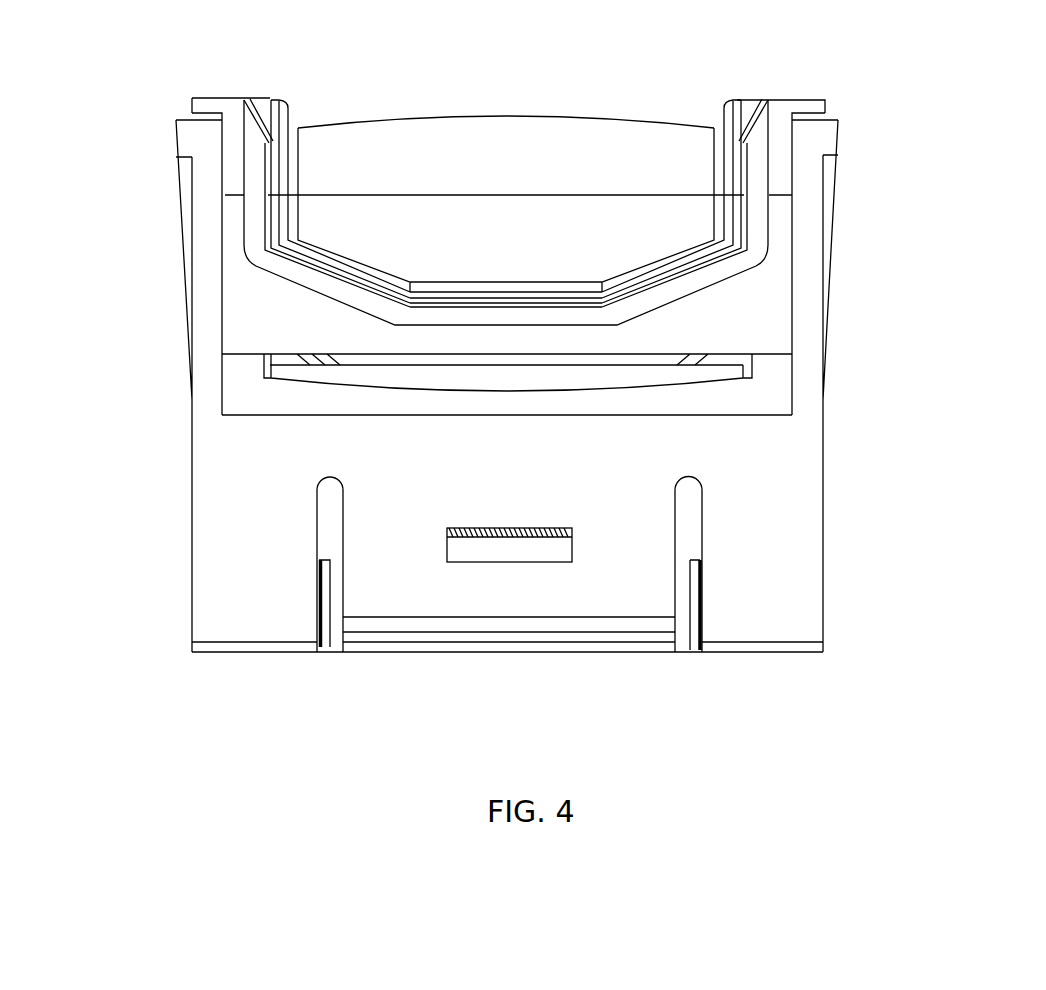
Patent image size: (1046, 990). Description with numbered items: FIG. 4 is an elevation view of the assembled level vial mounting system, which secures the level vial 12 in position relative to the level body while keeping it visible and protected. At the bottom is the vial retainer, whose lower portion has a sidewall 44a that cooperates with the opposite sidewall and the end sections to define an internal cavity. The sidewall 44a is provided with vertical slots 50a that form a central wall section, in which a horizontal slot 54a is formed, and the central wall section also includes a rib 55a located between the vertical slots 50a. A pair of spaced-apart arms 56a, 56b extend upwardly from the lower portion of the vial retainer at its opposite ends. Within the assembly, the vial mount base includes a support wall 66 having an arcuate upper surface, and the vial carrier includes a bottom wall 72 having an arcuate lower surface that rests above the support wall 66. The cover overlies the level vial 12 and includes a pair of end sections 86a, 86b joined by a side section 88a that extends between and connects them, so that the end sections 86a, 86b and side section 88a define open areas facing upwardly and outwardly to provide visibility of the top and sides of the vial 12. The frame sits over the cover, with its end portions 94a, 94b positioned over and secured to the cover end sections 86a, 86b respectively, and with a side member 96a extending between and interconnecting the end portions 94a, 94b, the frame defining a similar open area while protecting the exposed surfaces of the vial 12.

The level vial 12 is at (497, 117).
The sidewall 44a is at (802, 567).
The vertical slot 50a is at (323, 545).
The horizontal slot 54a is at (488, 550).
The rib 55a is at (515, 633).
The arm 56a is at (190, 258).
The arm 56b is at (823, 255).
The support wall 66 is at (342, 400).
The bottom wall 72 is at (330, 380).
The end section 86a is at (232, 216).
The end section 86b is at (780, 228).
The side section 88a is at (390, 334).
The end portion 94a is at (222, 96).
The end portion 94b is at (778, 98).
The side member 96a is at (713, 289).